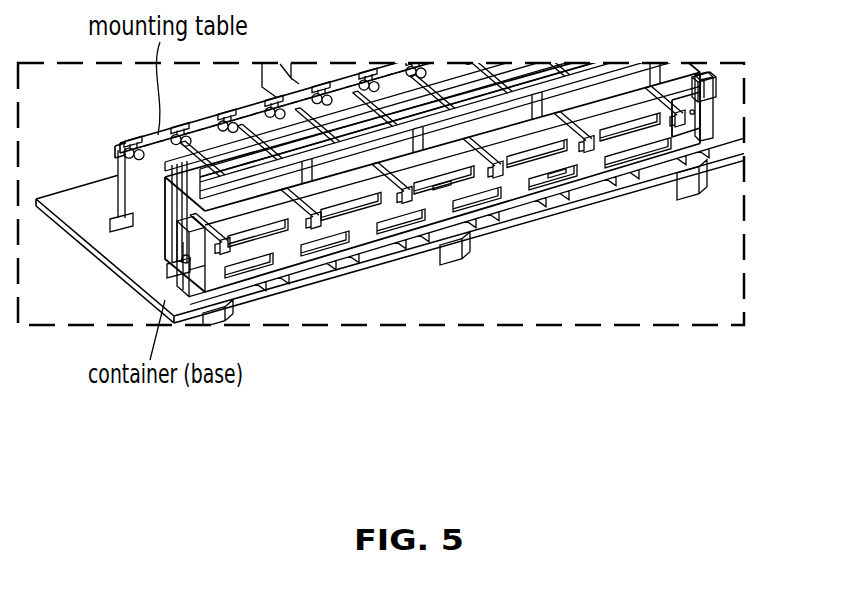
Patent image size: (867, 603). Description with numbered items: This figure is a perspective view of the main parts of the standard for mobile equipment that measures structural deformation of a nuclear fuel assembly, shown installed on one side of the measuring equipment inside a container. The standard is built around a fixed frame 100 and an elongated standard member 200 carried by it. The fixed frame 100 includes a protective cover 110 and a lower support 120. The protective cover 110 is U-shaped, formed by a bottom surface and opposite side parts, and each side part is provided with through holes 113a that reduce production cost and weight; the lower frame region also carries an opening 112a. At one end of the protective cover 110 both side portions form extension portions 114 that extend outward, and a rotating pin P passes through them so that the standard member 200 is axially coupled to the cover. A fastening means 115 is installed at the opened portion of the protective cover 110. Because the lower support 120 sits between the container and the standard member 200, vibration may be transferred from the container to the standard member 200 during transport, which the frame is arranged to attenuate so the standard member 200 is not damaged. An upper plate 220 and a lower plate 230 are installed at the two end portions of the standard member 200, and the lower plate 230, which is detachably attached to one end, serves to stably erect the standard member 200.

The fixed frame 100 is at (457, 220).
The protective cover 110 is at (491, 178).
The lower support 120 is at (364, 240).
The opening of lower frame 112a is at (557, 176).
The through hole 113a is at (442, 187).
The extension portion 114 is at (678, 121).
The fastening means 115 is at (296, 226).
The standard member 200 is at (540, 138).
The upper plate 220 is at (178, 232).
The lower plate 230 is at (714, 90).
The rotating pin P is at (696, 112).